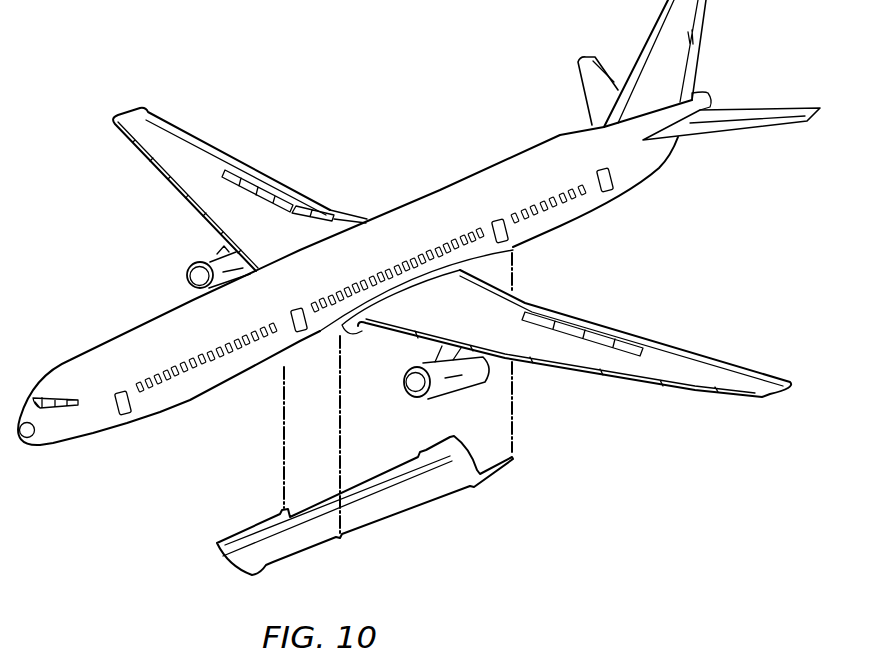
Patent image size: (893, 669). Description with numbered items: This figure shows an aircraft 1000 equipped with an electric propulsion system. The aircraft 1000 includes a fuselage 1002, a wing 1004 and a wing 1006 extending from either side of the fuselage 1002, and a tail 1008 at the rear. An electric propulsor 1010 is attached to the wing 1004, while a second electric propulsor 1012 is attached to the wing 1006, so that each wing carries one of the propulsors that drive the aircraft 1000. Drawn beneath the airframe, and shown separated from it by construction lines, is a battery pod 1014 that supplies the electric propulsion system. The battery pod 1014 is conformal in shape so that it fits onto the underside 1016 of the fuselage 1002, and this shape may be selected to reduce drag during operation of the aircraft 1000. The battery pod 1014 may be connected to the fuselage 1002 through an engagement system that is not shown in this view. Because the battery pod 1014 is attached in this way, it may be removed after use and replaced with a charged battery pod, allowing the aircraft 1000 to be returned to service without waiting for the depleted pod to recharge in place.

The aircraft 1000 is at (196, 65).
The fuselage 1002 is at (396, 203).
The wing 1004 is at (137, 122).
The wing 1006 is at (657, 353).
The tail 1008 is at (692, 37).
The electric propulsor 1010 is at (188, 277).
The electric propulsor 1012 is at (408, 402).
The battery pod 1014 is at (337, 551).
The underside 1016 is at (210, 388).